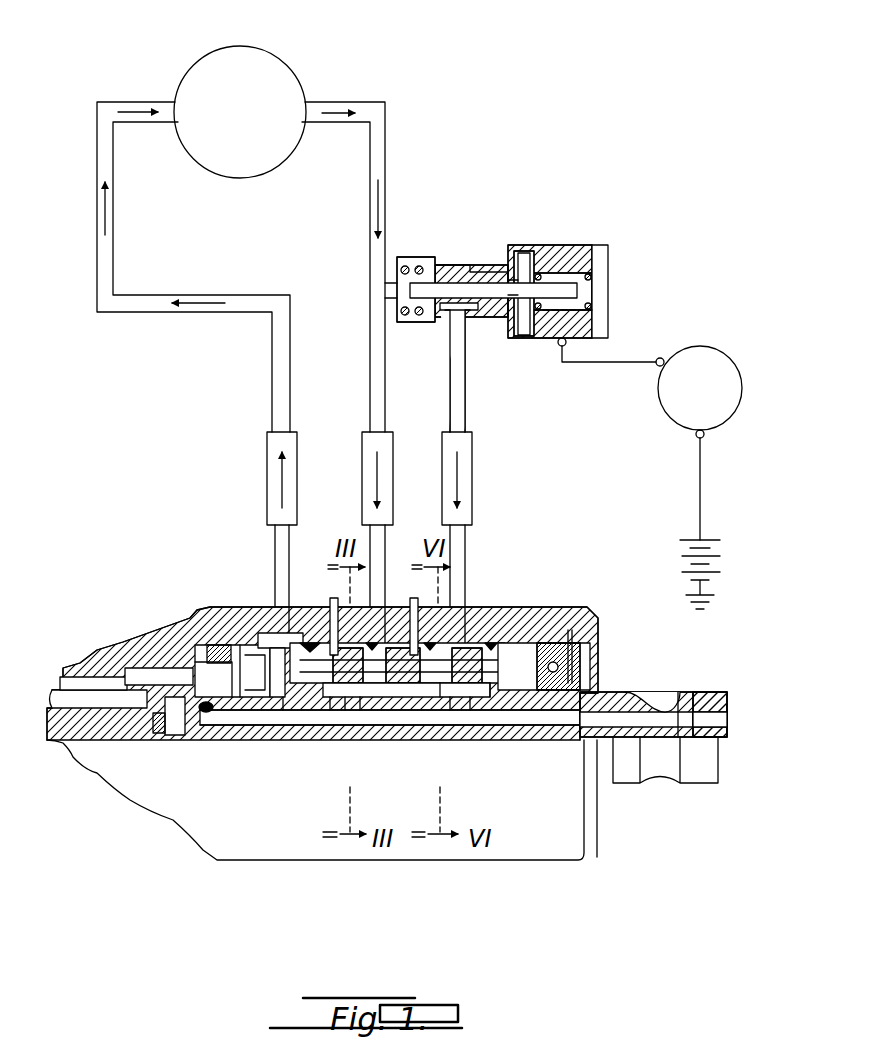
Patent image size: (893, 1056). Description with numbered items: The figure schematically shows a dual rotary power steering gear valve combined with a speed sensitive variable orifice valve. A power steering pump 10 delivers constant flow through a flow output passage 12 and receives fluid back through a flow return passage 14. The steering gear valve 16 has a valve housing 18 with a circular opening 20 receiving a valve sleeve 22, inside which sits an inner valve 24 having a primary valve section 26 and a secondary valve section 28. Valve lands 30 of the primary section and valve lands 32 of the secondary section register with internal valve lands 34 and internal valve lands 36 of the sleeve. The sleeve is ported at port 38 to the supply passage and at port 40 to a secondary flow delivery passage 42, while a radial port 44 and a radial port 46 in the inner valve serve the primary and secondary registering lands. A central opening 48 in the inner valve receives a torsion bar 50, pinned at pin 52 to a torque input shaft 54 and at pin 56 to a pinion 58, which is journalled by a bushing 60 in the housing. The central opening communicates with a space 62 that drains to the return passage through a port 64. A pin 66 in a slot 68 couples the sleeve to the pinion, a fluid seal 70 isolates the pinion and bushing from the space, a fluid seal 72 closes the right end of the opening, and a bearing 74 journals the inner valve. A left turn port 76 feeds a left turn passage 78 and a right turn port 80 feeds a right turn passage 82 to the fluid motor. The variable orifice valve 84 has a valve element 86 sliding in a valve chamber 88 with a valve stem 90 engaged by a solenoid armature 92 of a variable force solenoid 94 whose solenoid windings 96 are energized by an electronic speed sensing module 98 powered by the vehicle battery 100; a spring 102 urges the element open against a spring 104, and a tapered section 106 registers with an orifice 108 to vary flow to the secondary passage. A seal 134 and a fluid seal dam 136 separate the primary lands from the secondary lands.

The power steering pump 10 is at (282, 62).
The flow output passage 12 is at (345, 105).
The flow return passage 14 is at (112, 102).
The steering gear valve 16 is at (548, 645).
The valve housing 18 is at (530, 648).
The circular opening 20 is at (496, 625).
The valve sleeve 22 is at (440, 683).
The inner valve 24 is at (280, 700).
The primary valve section 26 is at (335, 690).
The secondary valve section 28 is at (500, 690).
The valve lands 30 is at (370, 690).
The valve lands 32 is at (466, 716).
The internal valve lands 34 is at (402, 675).
The internal valve lands 36 is at (490, 690).
The port 38 is at (400, 700).
The port 40 is at (470, 660).
The secondary flow delivery passage 42 is at (463, 535).
The radial port 44 is at (386, 690).
The radial port 46 is at (466, 710).
The central opening 48 is at (565, 716).
The torsion bar 50 is at (250, 718).
The pin 52 is at (716, 705).
The torque input shaft 54 is at (684, 705).
The pin 56 is at (176, 732).
The pinion 58 is at (76, 695).
The bushing 60 is at (140, 670).
The space 62 is at (214, 714).
The port 64 is at (281, 665).
The pin 66 is at (250, 645).
The slot 68 is at (276, 660).
The fluid seal 70 is at (245, 660).
The fluid seal 72 is at (582, 668).
The bearing 74 is at (552, 645).
The left turn port 76 is at (330, 640).
The left turn passage 78 is at (330, 600).
The right turn port 80 is at (411, 640).
The right turn passage 82 is at (410, 598).
The variable orifice valve 84 is at (470, 262).
The valve element 86 is at (480, 287).
The valve chamber 88 is at (414, 257).
The valve stem 90 is at (508, 298).
The solenoid armature 92 is at (576, 290).
The variable force solenoid 94 is at (614, 262).
The solenoid windings 96 is at (566, 250).
The electronic speed sensing module 98 is at (712, 360).
The vehicle battery 100 is at (720, 545).
The spring 102 is at (600, 306).
The spring 104 is at (403, 318).
The tapered section 106 is at (441, 312).
The orifice 108 is at (452, 268).
The seal 134 is at (284, 700).
The fluid seal dam 136 is at (478, 650).